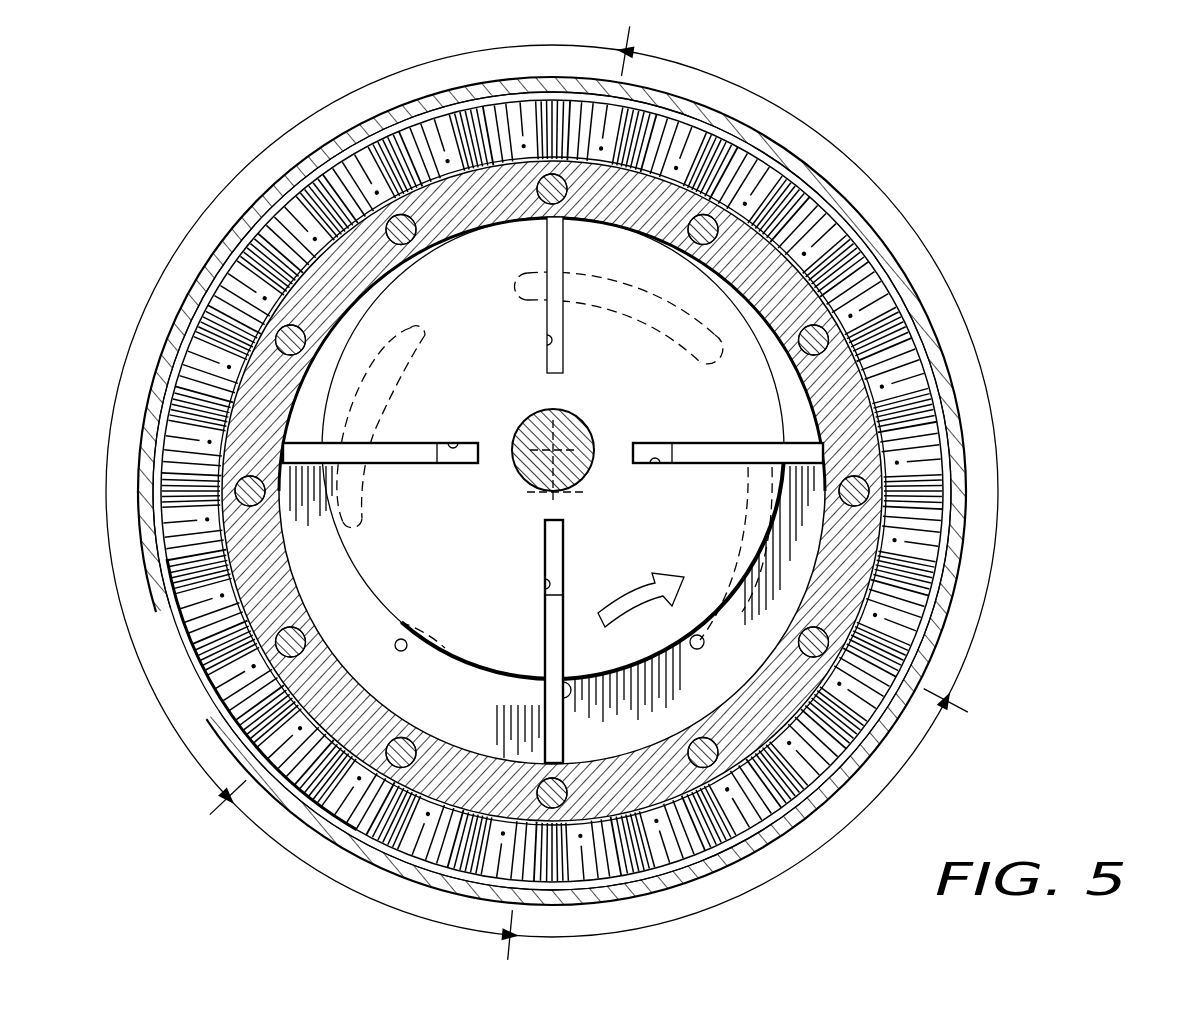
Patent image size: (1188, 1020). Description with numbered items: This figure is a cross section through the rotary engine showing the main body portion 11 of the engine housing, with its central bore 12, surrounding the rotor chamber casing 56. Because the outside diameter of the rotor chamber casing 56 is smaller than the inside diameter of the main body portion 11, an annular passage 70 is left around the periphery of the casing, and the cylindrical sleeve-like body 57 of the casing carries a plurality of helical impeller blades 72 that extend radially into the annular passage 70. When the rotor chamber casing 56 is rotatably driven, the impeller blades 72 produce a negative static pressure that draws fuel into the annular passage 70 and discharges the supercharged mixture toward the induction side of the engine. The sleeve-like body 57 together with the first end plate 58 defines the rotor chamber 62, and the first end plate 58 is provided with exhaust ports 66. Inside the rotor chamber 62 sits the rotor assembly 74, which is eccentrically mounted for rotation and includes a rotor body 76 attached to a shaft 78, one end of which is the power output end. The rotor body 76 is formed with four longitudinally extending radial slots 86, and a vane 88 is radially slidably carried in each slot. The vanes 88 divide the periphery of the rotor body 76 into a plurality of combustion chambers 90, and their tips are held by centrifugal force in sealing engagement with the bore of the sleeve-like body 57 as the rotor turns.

The main body portion 11 is at (777, 140).
The central bore 12 is at (697, 128).
The rotor chamber casing 56 is at (925, 640).
The cylindrical sleeve-like body 57 is at (758, 733).
The first end plate 58 is at (665, 653).
The rotor chamber 62 is at (608, 752).
The exhaust ports 66 is at (418, 360).
The annular passage 70 is at (178, 628).
The helical impeller blades 72 is at (392, 135).
The rotor assembly 74 is at (621, 674).
The rotor body 76 is at (460, 573).
The shaft 78 is at (580, 425).
The radial slots 86 is at (547, 340).
The vane 88 is at (547, 249).
The combustion chambers 90 is at (318, 423).